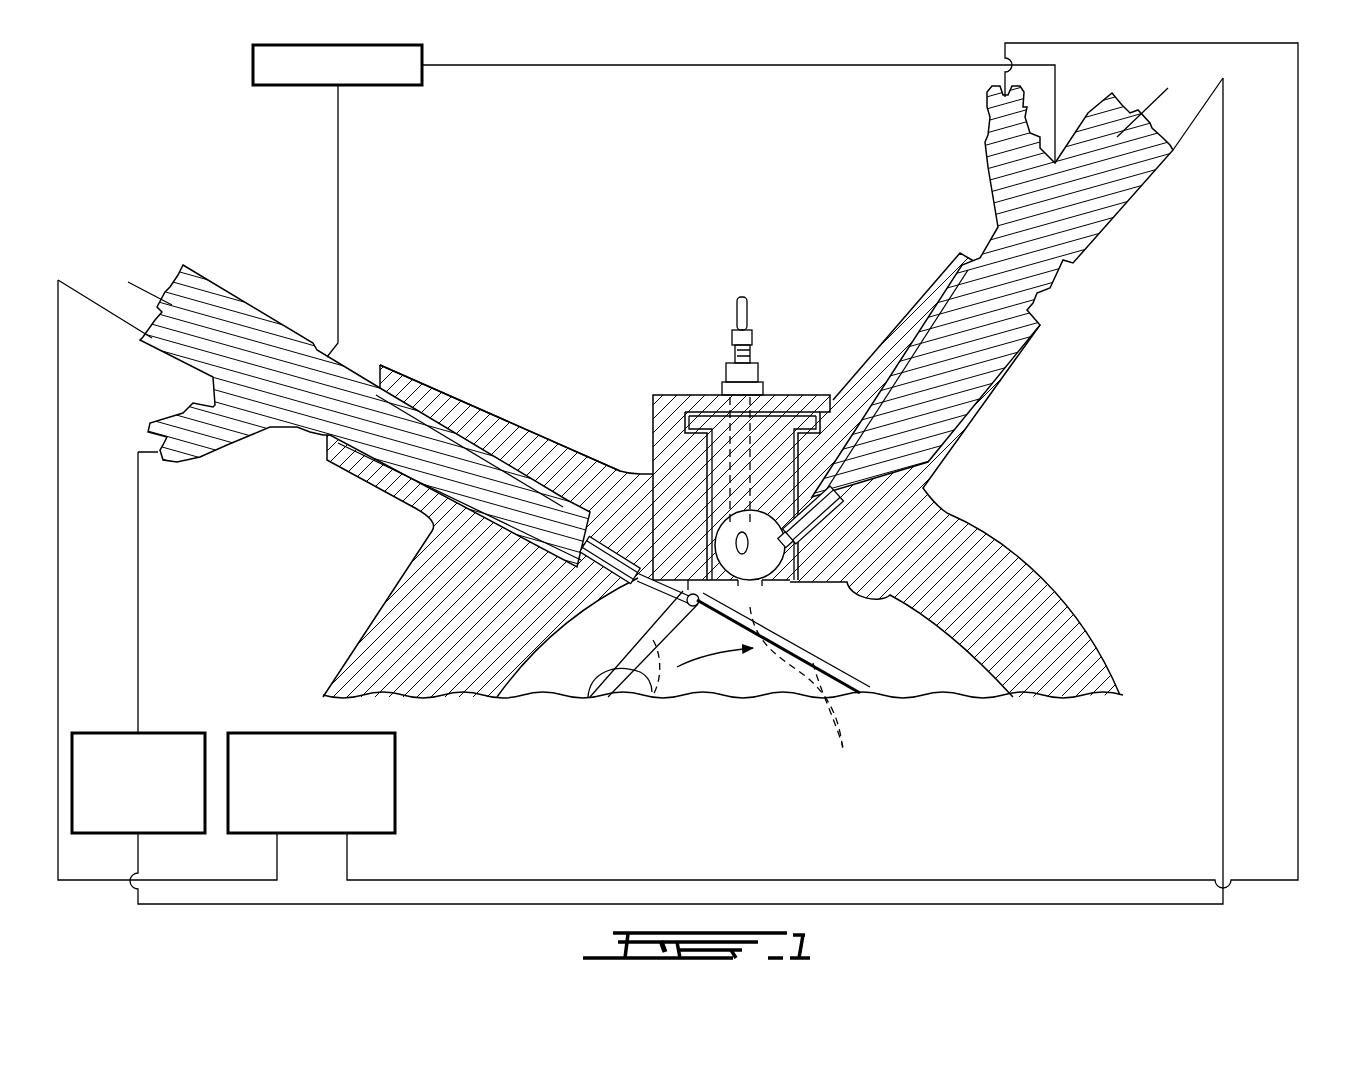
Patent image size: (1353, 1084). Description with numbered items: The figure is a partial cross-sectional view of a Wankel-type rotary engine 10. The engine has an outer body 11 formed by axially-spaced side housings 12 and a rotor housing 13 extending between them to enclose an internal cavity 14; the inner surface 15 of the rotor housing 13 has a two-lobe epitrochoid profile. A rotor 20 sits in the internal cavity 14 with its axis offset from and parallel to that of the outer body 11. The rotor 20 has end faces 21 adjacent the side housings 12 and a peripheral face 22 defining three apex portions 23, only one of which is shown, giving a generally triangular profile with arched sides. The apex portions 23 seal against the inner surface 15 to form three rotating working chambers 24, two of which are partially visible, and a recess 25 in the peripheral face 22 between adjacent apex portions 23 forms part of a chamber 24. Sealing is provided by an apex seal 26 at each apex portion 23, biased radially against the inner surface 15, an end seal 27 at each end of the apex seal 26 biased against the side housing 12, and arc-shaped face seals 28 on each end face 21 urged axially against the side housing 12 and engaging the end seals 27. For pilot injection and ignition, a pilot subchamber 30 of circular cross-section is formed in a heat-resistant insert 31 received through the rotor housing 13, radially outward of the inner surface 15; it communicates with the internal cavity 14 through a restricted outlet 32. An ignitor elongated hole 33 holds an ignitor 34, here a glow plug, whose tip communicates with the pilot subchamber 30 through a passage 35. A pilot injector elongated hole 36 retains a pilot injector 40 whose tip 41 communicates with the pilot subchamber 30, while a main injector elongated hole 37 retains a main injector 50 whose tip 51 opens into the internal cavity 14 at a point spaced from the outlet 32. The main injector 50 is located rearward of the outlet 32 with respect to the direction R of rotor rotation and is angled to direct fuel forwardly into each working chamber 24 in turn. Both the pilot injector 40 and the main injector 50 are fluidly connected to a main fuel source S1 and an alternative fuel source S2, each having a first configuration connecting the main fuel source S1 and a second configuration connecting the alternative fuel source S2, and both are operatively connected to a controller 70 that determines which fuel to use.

The rotary engine 10 is at (1250, 397).
The outer body 11 is at (1016, 544).
The side housings 12 is at (960, 632).
The rotor housing 13 is at (1057, 660).
The internal cavity 14 is at (919, 666).
The inner surface 15 is at (951, 641).
The rotor 20 is at (717, 676).
The end faces 21 is at (757, 670).
The peripheral face 22 is at (612, 665).
The apex portions 23 is at (660, 628).
The working chambers 24 is at (533, 645).
The recess 25 is at (803, 693).
The apex seal 26 is at (636, 574).
The end seal 27 is at (697, 607).
The face seal 28 is at (657, 640).
The pilot subchamber 30 is at (779, 418).
The insert 31 is at (764, 528).
The outlet 32 is at (757, 578).
The ignitor elongated hole 33 is at (700, 410).
The ignitor 34 is at (735, 288).
The passage 35 is at (688, 571).
The pilot injector elongated hole 36 is at (985, 333).
The main injector elongated hole 37 is at (418, 420).
The pilot injector 40 is at (1150, 194).
The tip 41 is at (920, 478).
The main injector 50 is at (215, 277).
The tip 51 is at (625, 585).
The controller 70 is at (253, 66).
The direction of rotor rotation R is at (715, 647).
The main fuel source S1 is at (177, 733).
The alternative fuel source S2 is at (278, 733).